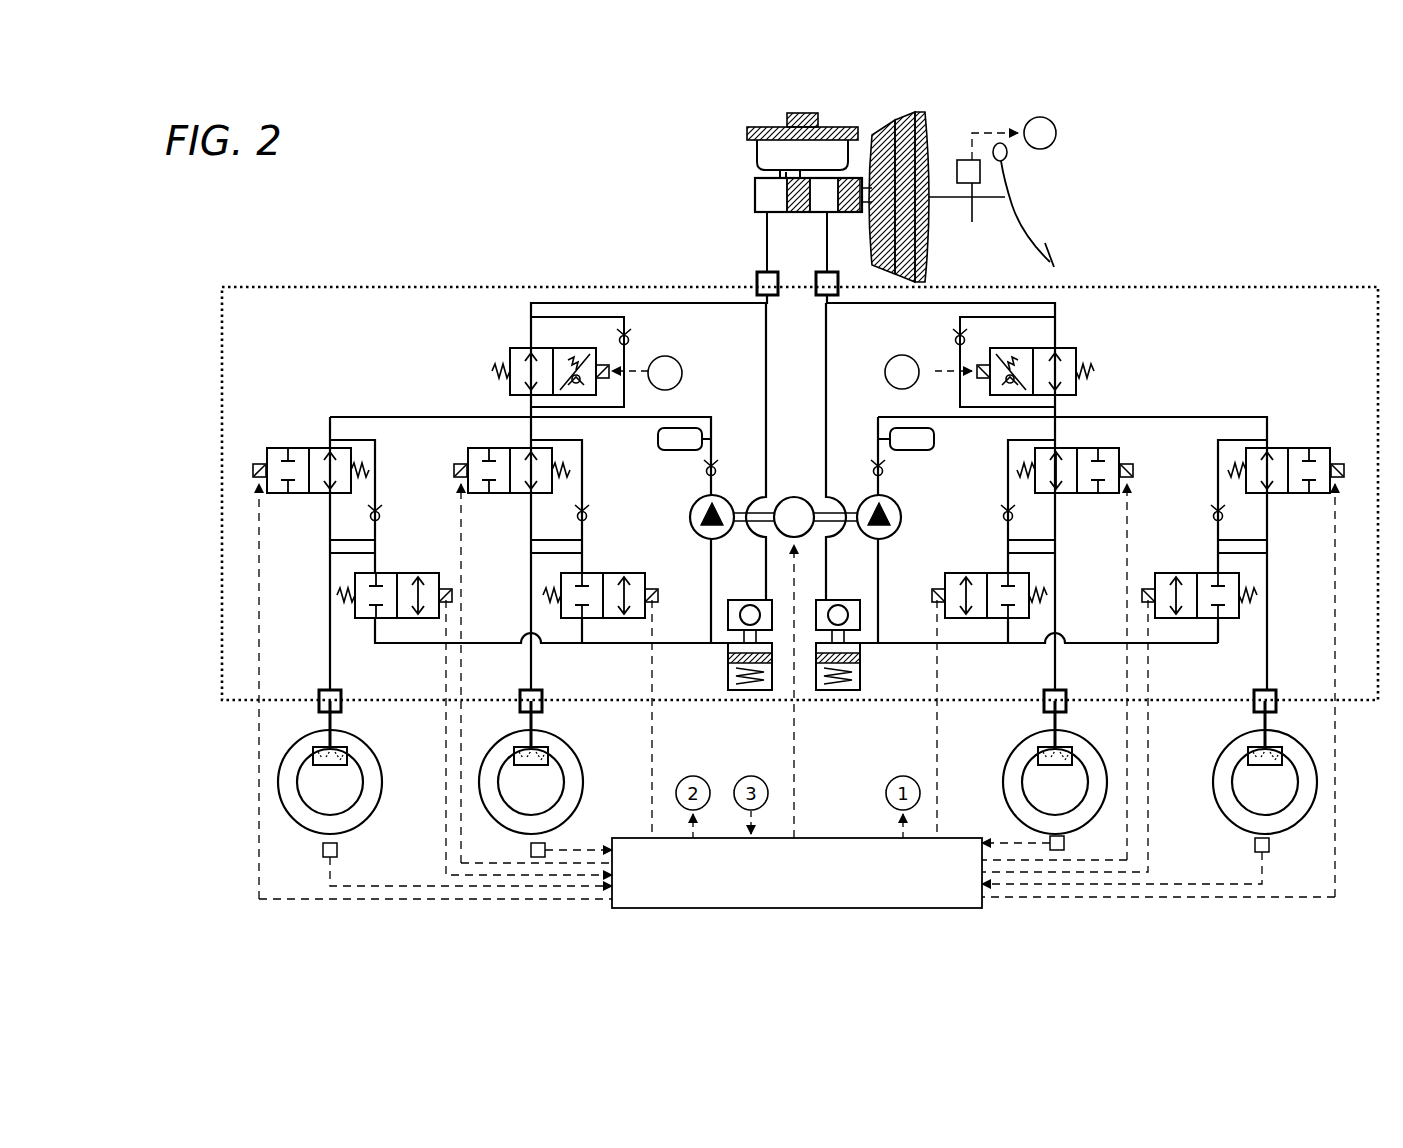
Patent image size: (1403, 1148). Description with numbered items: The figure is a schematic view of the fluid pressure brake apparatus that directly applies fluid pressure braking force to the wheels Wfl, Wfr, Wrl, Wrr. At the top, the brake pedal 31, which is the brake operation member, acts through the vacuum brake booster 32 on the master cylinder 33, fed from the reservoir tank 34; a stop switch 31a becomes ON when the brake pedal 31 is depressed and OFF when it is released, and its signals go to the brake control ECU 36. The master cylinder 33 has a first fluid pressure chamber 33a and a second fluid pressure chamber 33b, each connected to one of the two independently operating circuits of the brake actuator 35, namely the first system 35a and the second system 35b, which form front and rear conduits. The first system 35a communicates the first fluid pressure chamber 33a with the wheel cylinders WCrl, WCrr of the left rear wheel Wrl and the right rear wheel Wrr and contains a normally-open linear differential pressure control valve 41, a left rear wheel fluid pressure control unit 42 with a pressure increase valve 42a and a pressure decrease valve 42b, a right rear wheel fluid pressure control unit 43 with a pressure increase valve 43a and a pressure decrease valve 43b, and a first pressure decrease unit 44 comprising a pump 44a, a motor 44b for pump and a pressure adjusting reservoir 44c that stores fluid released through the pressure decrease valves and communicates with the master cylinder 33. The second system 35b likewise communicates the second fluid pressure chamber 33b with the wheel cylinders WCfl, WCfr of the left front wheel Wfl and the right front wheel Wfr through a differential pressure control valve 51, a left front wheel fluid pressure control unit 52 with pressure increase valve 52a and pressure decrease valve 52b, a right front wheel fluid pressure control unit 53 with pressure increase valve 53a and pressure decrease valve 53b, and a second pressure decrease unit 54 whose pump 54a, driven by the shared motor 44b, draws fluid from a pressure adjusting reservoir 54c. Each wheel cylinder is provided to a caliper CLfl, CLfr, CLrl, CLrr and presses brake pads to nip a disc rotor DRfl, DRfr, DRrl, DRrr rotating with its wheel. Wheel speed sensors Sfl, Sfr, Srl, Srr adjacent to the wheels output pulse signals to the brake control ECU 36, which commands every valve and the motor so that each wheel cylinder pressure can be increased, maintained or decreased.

The brake pedal 31 is at (1010, 215).
The stop switch 31a is at (1002, 183).
The vacuum brake booster 32 is at (928, 268).
The master cylinder 33 is at (757, 190).
The first fluid pressure chamber 33a is at (822, 212).
The second fluid pressure chamber 33b is at (764, 200).
The reservoir tank 34 is at (787, 120).
The brake actuator 35 is at (1257, 283).
The first system 35a is at (1068, 330).
The second system 35b is at (514, 330).
The brake control ECU 36 is at (837, 838).
The differential pressure control valve 41 is at (1080, 360).
The left rear wheel fluid pressure control unit 42 is at (1038, 657).
The pressure increase valve 42a is at (1125, 468).
The pressure decrease valve 42b is at (1005, 573).
The right rear wheel fluid pressure control unit 43 is at (1248, 657).
The pressure increase valve 43a is at (1292, 447).
The pressure decrease valve 43b is at (1214, 573).
The first pressure decrease unit 44 is at (862, 716).
The pump 44a is at (901, 518).
The motor for pump 44b is at (794, 497).
The pressure adjusting reservoir 44c is at (828, 700).
The differential pressure control valve 51 is at (508, 360).
The left front wheel fluid pressure control unit 52 is at (349, 657).
The pressure increase valve 52a is at (300, 449).
The pressure decrease valve 52b is at (405, 573).
The right front wheel fluid pressure control unit 53 is at (559, 657).
The pressure increase valve 53a is at (468, 470).
The pressure decrease valve 53b is at (608, 573).
The second pressure decrease unit 54 is at (729, 716).
The pump 54a is at (690, 516).
The pressure adjusting reservoir 54c is at (760, 700).
The wheel cylinder WCfl is at (346, 747).
The caliper CLfl is at (350, 757).
The disc rotor DRfl is at (365, 785).
The left front wheel Wfl is at (378, 800).
The wheel speed sensor Sfl is at (338, 853).
The wheel cylinder WCfr is at (547, 747).
The caliper CLfr is at (551, 757).
The disc rotor DRfr is at (567, 785).
The right front wheel Wfr is at (580, 800).
The wheel speed sensor Sfr is at (531, 850).
The wheel cylinder WCrl is at (1037, 747).
The caliper CLrl is at (1034, 757).
The disc rotor DRrl is at (1025, 785).
The left rear wheel Wrl is at (1006, 800).
The wheel speed sensor Srl is at (1064, 843).
The wheel cylinder WCrr is at (1247, 747).
The caliper CLrr is at (1244, 757).
The disc rotor DRrr is at (1235, 785).
The right rear wheel Wrr is at (1216, 800).
The wheel speed sensor Srr is at (1255, 848).